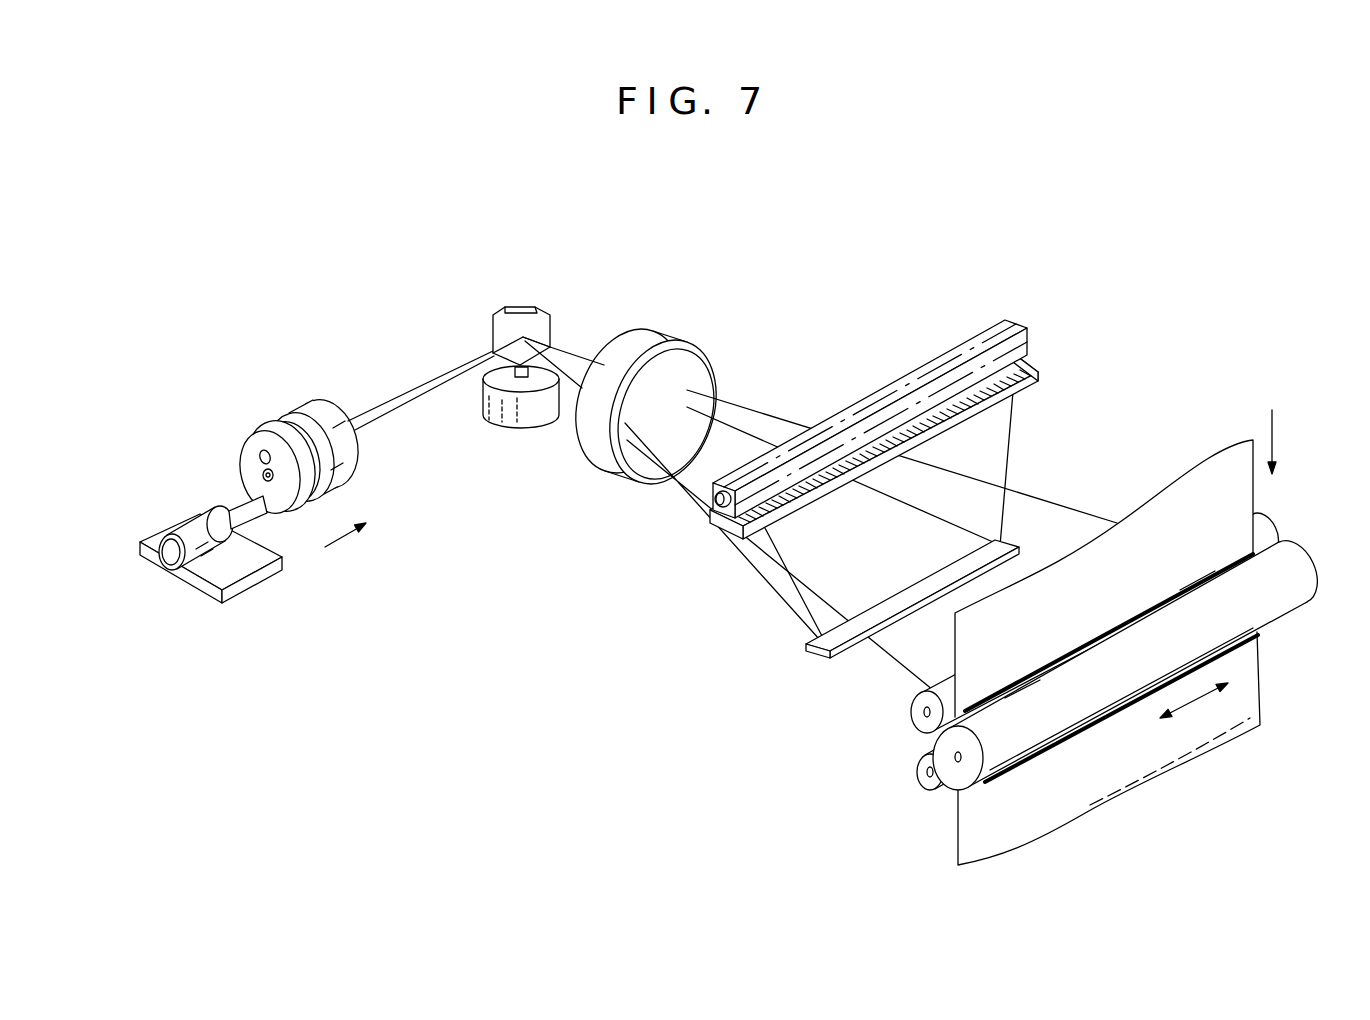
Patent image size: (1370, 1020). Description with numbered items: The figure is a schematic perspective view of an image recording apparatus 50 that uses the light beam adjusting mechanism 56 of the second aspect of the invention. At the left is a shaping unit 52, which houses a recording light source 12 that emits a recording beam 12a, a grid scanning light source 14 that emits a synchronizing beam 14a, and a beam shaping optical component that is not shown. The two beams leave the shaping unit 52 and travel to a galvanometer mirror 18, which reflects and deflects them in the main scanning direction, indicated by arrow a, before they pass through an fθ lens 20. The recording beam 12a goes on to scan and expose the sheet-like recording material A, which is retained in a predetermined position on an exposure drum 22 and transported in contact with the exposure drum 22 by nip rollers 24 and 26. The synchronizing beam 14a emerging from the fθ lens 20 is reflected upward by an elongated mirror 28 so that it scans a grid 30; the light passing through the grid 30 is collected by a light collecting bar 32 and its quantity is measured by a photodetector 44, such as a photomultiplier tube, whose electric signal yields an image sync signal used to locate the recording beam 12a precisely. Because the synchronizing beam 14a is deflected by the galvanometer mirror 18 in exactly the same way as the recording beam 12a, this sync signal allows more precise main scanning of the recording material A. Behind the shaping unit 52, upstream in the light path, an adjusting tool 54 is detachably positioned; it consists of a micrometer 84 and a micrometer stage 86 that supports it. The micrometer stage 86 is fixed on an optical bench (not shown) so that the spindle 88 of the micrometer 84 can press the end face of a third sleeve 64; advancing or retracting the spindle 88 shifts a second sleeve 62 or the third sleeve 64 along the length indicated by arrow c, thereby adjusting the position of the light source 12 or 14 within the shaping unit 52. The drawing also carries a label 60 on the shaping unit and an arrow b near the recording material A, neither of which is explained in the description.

The recording light source 12 is at (316, 502).
The recording light beam 12a is at (418, 395).
The grid scanning light source 14 is at (266, 436).
The grid scanning light beam 14a is at (402, 393).
The galvanometer mirror 18 is at (542, 323).
The fθ lens 20 is at (703, 332).
The exposure drum 22 is at (946, 788).
The nip roller 24 is at (912, 712).
The nip roller 26 is at (917, 771).
The elongated mirror 28 is at (815, 651).
The grid 30 is at (1044, 372).
The light collecting bar 32 is at (965, 342).
The photodetector 44 is at (723, 508).
The image recording apparatus 50 is at (575, 588).
The shaping unit 52 is at (328, 388).
The adjusting tool 54 is at (192, 628).
The light beam adjusting mechanism 56 is at (218, 303).
The disk body 60 is at (345, 442).
The second sleeve 62 is at (255, 470).
The third sleeve 64 is at (246, 447).
The micrometer 84 is at (176, 516).
The micrometer stage 86 is at (246, 570).
The spindle 88 is at (243, 526).
The recording material A is at (1205, 470).
The main scanning direction a is at (1194, 707).
The direction b is at (1271, 423).
The adjustment direction arrow c is at (345, 544).